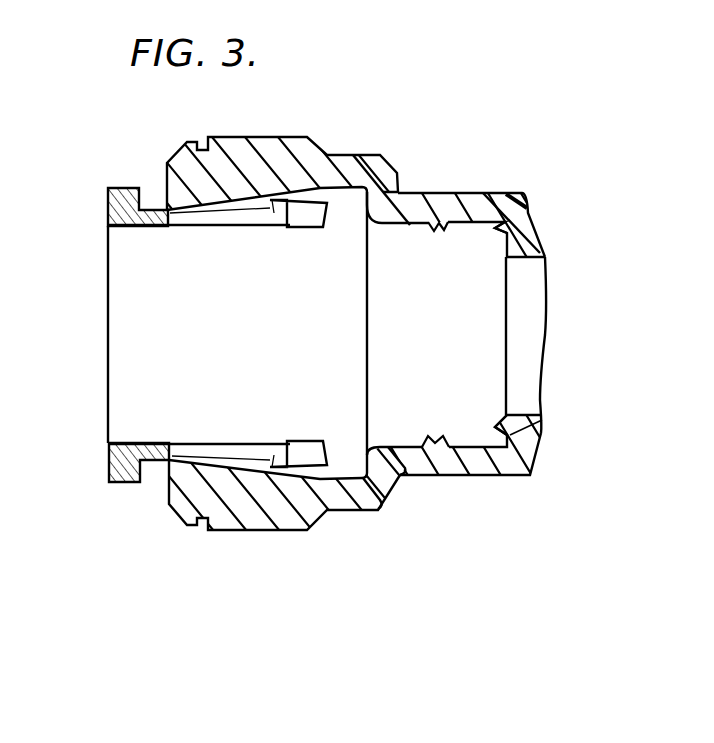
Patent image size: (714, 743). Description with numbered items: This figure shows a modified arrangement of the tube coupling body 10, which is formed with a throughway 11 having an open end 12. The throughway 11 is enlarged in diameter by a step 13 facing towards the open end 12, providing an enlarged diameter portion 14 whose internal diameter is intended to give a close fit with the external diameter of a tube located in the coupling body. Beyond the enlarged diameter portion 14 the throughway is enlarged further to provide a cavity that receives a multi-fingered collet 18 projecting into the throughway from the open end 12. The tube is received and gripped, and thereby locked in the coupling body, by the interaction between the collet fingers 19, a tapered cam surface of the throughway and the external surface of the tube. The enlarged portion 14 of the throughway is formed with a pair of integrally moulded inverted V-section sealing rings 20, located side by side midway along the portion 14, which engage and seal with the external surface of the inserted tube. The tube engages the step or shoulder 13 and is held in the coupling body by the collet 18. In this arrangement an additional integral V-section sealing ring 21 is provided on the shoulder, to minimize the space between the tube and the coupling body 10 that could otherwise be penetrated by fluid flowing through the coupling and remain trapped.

The tube coupling body 10 is at (350, 128).
The throughway 11 is at (526, 304).
The open end 12 is at (166, 178).
The step 13 is at (535, 433).
The enlarged diameter portion 14 is at (480, 205).
The multi-fingered collet 18 is at (108, 207).
The collet fingers 19 is at (272, 231).
The inverted V-section sealing rings 20 is at (436, 229).
The additional integral V-section sealing ring 21 is at (498, 240).